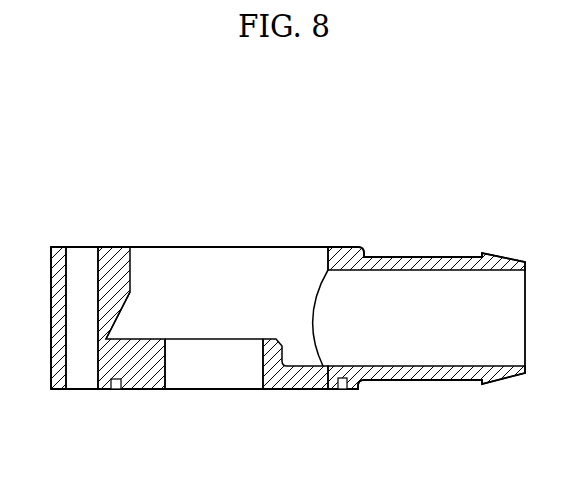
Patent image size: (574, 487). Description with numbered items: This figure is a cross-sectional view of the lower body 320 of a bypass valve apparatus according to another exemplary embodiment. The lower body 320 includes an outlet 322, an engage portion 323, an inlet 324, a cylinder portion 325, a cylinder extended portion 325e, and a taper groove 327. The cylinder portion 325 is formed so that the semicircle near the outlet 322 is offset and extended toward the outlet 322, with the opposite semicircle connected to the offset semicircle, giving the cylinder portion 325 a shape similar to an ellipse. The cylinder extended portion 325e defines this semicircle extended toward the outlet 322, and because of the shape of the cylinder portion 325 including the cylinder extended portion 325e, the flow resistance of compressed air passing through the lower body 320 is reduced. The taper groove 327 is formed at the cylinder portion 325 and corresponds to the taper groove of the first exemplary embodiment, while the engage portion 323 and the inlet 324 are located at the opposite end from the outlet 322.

The lower body 320 is at (262, 218).
The outlet 322 is at (389, 302).
The engage portion 323 is at (58, 263).
The inlet 324 is at (217, 369).
The cylinder portion 325 is at (141, 262).
The cylinder extended portion 325e is at (328, 258).
The taper groove 327 is at (113, 303).